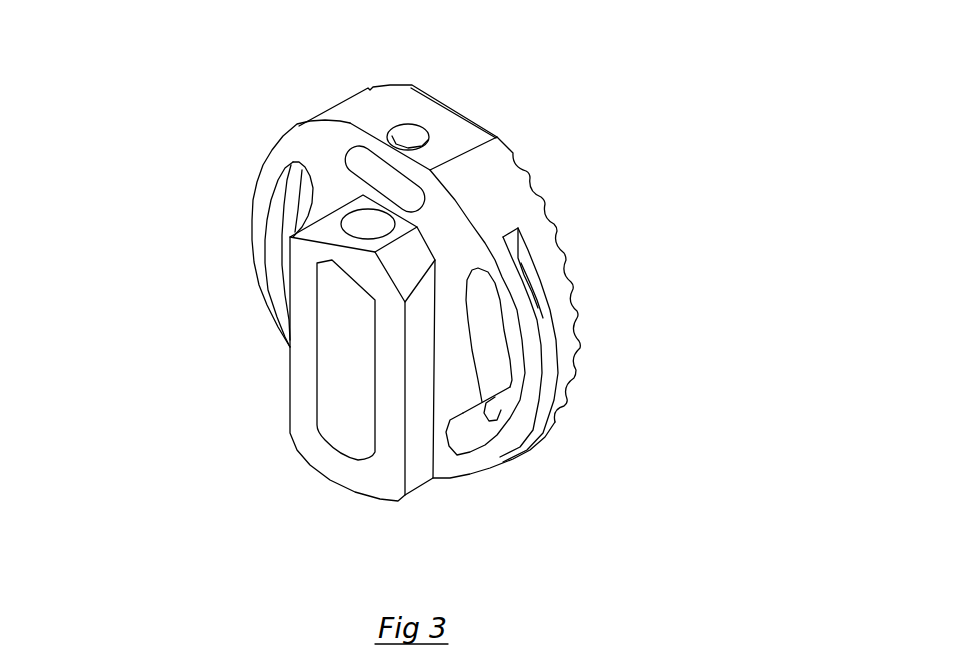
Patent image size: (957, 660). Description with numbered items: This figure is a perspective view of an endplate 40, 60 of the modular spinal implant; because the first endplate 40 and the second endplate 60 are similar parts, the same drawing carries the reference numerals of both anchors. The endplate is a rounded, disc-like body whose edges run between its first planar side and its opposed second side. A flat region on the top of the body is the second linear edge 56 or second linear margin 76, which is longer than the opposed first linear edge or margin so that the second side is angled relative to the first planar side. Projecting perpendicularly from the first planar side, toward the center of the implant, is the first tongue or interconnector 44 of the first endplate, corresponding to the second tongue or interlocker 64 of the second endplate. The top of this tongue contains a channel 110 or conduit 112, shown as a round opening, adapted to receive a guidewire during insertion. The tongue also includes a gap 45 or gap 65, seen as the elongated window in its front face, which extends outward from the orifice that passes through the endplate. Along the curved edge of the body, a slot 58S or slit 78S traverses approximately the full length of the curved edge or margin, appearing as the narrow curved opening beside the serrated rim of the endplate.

The first endplate 40 is at (455, 289).
The second endplate 60 is at (455, 289).
The second linear edge 56 is at (489, 94).
The second linear margin 76 is at (489, 94).
The channel 110 is at (235, 203).
The conduit 112 is at (235, 203).
The gap 45 is at (236, 360).
The gap 65 is at (236, 360).
The slot 58S is at (666, 279).
The slit 78S is at (666, 279).
The first tongue 44 is at (346, 363).
The second tongue 64 is at (346, 363).